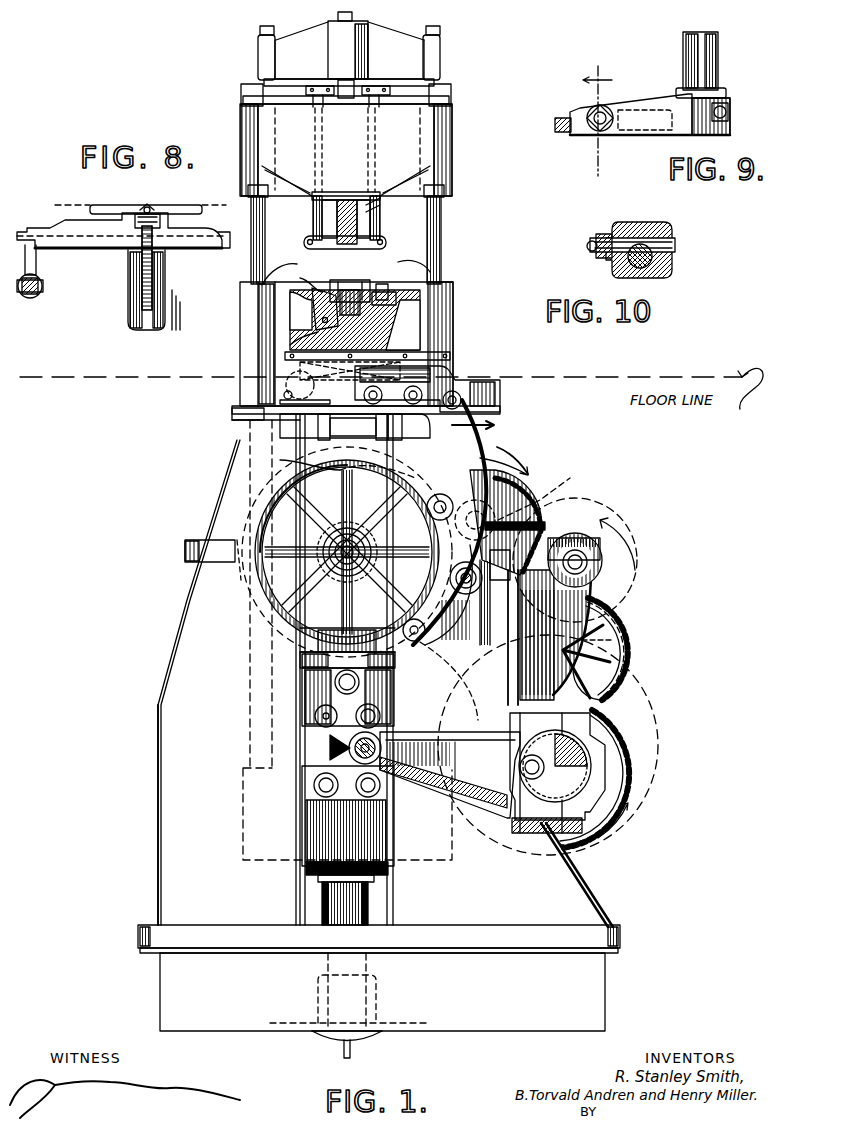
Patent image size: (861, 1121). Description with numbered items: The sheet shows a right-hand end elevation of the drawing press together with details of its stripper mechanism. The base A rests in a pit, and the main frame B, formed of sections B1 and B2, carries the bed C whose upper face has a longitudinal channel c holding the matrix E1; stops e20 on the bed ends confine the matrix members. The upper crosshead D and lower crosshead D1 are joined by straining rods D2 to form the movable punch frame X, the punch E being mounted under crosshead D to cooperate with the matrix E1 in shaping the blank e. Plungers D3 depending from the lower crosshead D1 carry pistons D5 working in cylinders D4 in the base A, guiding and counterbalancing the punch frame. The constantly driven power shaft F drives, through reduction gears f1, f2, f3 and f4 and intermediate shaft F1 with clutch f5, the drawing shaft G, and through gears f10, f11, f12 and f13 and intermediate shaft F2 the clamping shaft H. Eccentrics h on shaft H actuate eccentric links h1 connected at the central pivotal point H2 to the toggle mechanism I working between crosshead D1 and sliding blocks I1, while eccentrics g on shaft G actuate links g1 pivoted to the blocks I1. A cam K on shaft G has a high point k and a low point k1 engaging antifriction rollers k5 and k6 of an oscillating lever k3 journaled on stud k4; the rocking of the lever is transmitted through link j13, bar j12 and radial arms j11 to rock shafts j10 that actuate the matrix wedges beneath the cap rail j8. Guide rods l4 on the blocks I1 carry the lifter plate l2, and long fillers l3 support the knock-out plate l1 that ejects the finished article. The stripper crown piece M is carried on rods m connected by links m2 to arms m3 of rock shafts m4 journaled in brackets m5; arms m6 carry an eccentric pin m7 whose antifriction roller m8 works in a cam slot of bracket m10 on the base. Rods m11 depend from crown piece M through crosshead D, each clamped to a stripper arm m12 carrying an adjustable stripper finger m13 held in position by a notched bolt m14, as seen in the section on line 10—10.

In FIG. 1, the crown piece M is at (380, 42).
In FIG. 1, the rods m11 is at (308, 82).
In FIG. 9, the rods m11 is at (718, 72).
In FIG. 1, the upper crosshead D is at (444, 130).
In FIG. 1, the movable punch frame X is at (346, 168).
In FIG. 1, the straining rods D2 is at (252, 232).
In FIG. 1, the punch E is at (382, 214).
In FIG. 1, the matrix E1 is at (362, 290).
In FIG. 1, the stripper arm m12 is at (308, 240).
In FIG. 9, the stripper arm m12 is at (730, 124).
In FIG. 10, the stripper arm m12 is at (638, 224).
In FIG. 1, the vertically disposed rods m is at (262, 272).
In FIG. 1, the blank e is at (318, 282).
In FIG. 1, the knock-out plate l1 is at (340, 288).
In FIG. 1, the fillers l3 is at (380, 290).
In FIG. 1, the cap rail j8 is at (388, 296).
In FIG. 1, the bed C is at (252, 300).
In FIG. 1, the longitudinal channel c is at (262, 290).
In FIG. 1, the stops e20 is at (290, 332).
In FIG. 1, the rock shafts j10 is at (265, 372).
In FIG. 1, the radial arms j11 is at (300, 386).
In FIG. 1, the link j13 is at (445, 395).
In FIG. 1, the lifter plate l2 is at (320, 432).
In FIG. 1, the bar j12 is at (332, 440).
In FIG. 1, the vertical guide rods l4 is at (412, 436).
In FIG. 1, the oscillating lever k3 is at (468, 450).
In FIG. 1, the main frame B is at (300, 666).
In FIG. 1, the frame section B1 is at (172, 706).
In FIG. 1, the frame section B2 is at (232, 461).
In FIG. 1, the eccentrics g is at (233, 539).
In FIG. 1, the cam K is at (290, 612).
In FIG. 1, the high point k is at (262, 584).
In FIG. 1, the drawing shaft G is at (330, 558).
In FIG. 1, the low point k1 is at (300, 478).
In FIG. 1, the reduction gear f4 is at (388, 470).
In FIG. 1, the eccentric links g1 is at (312, 654).
In FIG. 1, the antifriction roller k5 is at (476, 519).
In FIG. 1, the stud k4 is at (470, 594).
In FIG. 1, the antifriction roller k6 is at (410, 642).
In FIG. 1, the power shaft F is at (578, 552).
In FIG. 1, the reduction gear f1 is at (578, 552).
In FIG. 1, the gear f2 is at (545, 556).
In FIG. 1, the gear f3 is at (500, 520).
In FIG. 1, the clutch mechanism f5 is at (512, 470).
In FIG. 1, the intermediate shaft F1 is at (510, 510).
In FIG. 1, the reduction gear f10 is at (614, 575).
In FIG. 1, the intermediate shaft F2 is at (580, 670).
In FIG. 1, the gear f11 is at (612, 656).
In FIG. 1, the gear f12 is at (616, 660).
In FIG. 1, the sliding blocks I1 is at (320, 684).
In FIG. 1, the toggle mechanism I is at (348, 748).
In FIG. 1, the central pivotal point H2 is at (315, 772).
In FIG. 1, the lower crosshead D1 is at (310, 866).
In FIG. 1, the plungers D3 is at (370, 900).
In FIG. 1, the clamping shaft H is at (522, 815).
In FIG. 1, the eccentric links h1 is at (485, 760).
In FIG. 1, the reduction gear f13 is at (606, 742).
In FIG. 1, the eccentrics h is at (557, 773).
In FIG. 1, the base A is at (379, 940).
In FIG. 1, the pistons D5 is at (372, 972).
In FIG. 1, the cylinders D4 is at (340, 998).
In FIG. 8, the links m2 is at (34, 296).
In FIG. 8, the arms m3 is at (36, 268).
In FIG. 8, the rock shafts m4 is at (226, 236).
In FIG. 8, the brackets m5 is at (190, 206).
In FIG. 8, the arms m6 is at (160, 254).
In FIG. 8, the pin m7 is at (164, 214).
In FIG. 8, the antifriction roller m8 is at (146, 206).
In FIG. 8, the bracket m10 is at (136, 292).
In FIG. 9, the stripper finger m13 is at (563, 134).
In FIG. 10, the stripper finger m13 is at (606, 262).
In FIG. 9, the notched bolt m14 is at (606, 108).
In FIG. 10, the notched bolt m14 is at (672, 245).
In FIG. 9, the sectional line 10 is at (598, 119).